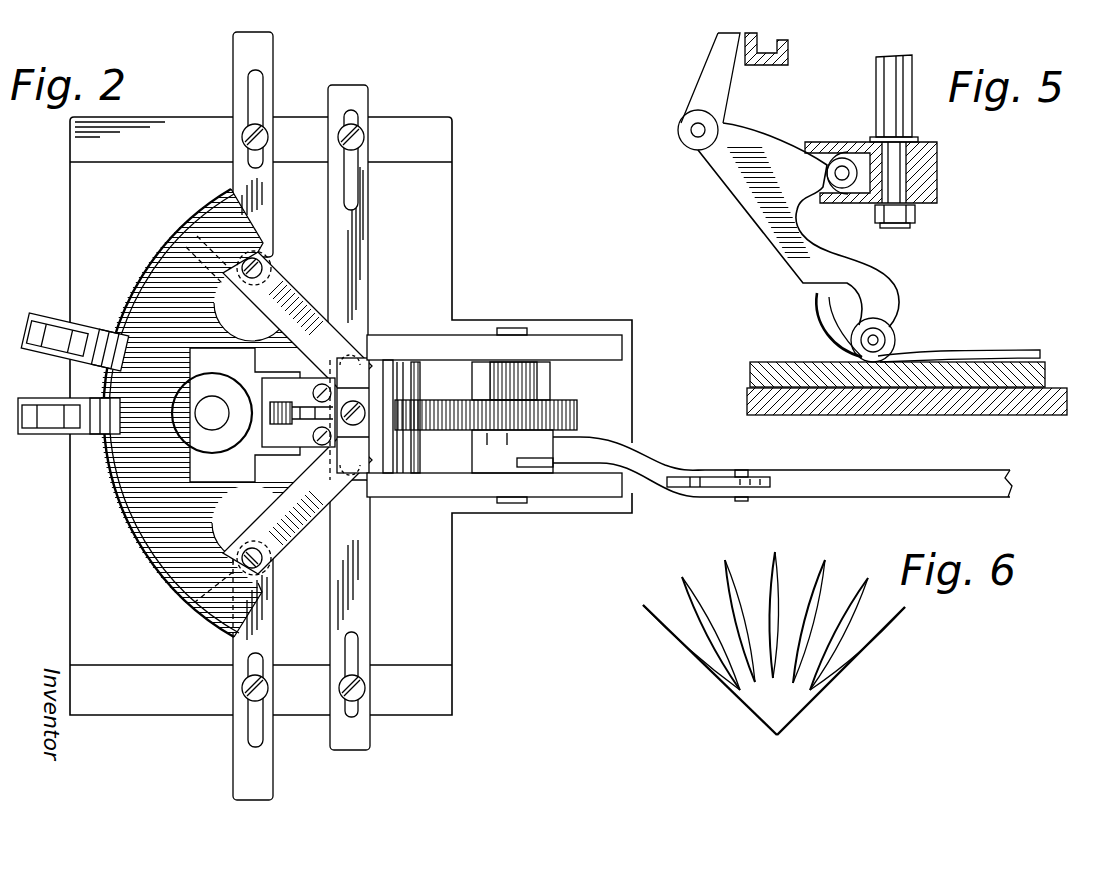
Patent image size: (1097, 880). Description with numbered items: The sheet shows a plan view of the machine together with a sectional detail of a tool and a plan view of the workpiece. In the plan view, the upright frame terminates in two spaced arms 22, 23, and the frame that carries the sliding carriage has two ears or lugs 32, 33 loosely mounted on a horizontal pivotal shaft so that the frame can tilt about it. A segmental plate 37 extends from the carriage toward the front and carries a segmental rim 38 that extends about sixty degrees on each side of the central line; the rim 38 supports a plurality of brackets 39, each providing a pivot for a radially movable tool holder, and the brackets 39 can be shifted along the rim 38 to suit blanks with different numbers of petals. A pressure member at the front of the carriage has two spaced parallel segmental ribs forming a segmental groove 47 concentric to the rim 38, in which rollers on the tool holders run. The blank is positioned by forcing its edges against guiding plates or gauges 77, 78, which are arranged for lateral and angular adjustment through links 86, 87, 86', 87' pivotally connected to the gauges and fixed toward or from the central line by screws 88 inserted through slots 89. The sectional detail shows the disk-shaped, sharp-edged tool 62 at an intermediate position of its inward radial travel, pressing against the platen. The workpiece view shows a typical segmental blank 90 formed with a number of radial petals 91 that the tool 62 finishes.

In FIG. 2, the link 87' is at (280, 144).
In FIG. 2, the link 86' is at (379, 222).
In FIG. 2, the guiding plate or gauge 78 is at (287, 297).
In FIG. 2, the guiding plate or gauge 77 is at (286, 528).
In FIG. 2, the arm 23 is at (397, 343).
In FIG. 2, the arm 22 is at (433, 485).
In FIG. 2, the ear or lug 33 is at (420, 383).
In FIG. 2, the ear or lug 32 is at (408, 463).
In FIG. 2, the bracket 39 is at (88, 438).
In FIG. 2, the segmental groove 47 is at (205, 420).
In FIG. 2, the segmental plate 37 is at (167, 520).
In FIG. 2, the segmental rim 38 is at (150, 572).
In FIG. 2, the link 86 is at (376, 615).
In FIG. 2, the link 87 is at (288, 672).
In FIG. 2, the screw 88 is at (248, 700).
In FIG. 2, the slot 89 is at (352, 653).
In FIG. 5, the tool 62 is at (897, 332).
In FIG. 6, the radial petal 91 is at (850, 665).
In FIG. 6, the segmental blank 90 is at (787, 710).